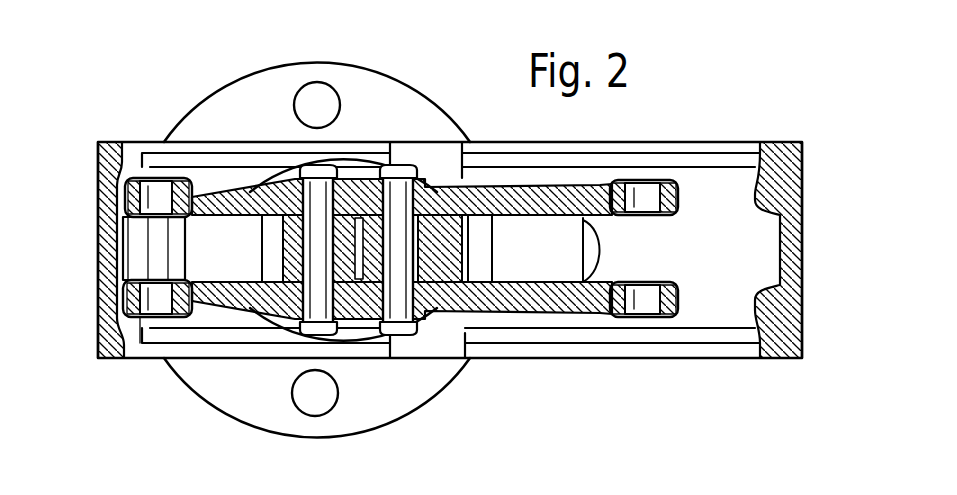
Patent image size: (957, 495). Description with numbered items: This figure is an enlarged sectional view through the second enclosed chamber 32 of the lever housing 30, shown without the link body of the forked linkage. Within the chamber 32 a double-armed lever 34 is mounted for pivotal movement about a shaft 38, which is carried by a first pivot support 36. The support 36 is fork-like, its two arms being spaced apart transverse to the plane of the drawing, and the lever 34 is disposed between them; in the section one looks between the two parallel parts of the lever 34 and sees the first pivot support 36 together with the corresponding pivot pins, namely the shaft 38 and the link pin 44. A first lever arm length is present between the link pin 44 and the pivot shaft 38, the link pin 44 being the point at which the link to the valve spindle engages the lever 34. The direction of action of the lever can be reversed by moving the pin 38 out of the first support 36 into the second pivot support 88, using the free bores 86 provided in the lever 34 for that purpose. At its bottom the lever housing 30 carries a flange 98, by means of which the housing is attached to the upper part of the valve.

The lever housing 30 is at (785, 345).
The second enclosed chamber 32 is at (708, 290).
The lever 34 is at (550, 297).
The support 36 is at (452, 312).
The shaft 38 is at (443, 250).
The link pin 44 is at (295, 308).
The free bores 86 is at (157, 298).
The second pivot support 88 is at (180, 240).
The flange 98 is at (218, 107).